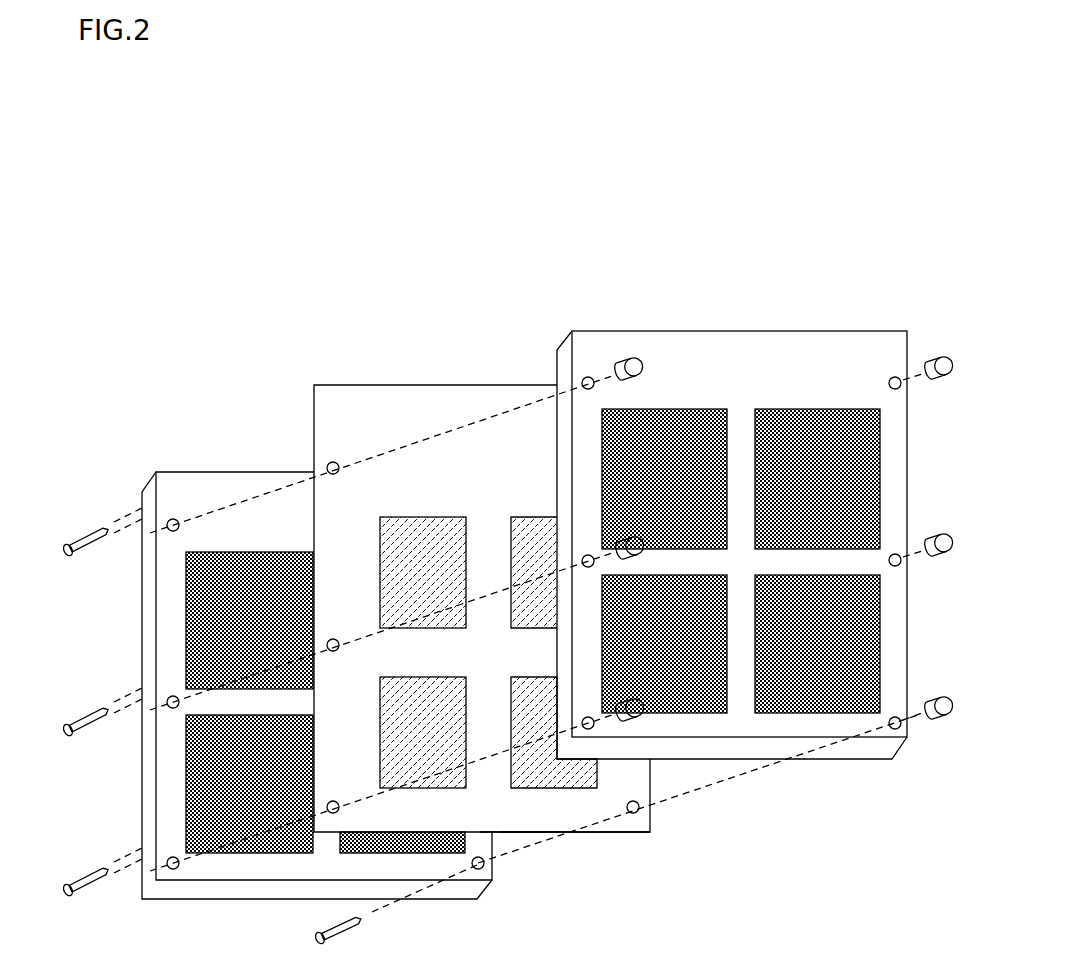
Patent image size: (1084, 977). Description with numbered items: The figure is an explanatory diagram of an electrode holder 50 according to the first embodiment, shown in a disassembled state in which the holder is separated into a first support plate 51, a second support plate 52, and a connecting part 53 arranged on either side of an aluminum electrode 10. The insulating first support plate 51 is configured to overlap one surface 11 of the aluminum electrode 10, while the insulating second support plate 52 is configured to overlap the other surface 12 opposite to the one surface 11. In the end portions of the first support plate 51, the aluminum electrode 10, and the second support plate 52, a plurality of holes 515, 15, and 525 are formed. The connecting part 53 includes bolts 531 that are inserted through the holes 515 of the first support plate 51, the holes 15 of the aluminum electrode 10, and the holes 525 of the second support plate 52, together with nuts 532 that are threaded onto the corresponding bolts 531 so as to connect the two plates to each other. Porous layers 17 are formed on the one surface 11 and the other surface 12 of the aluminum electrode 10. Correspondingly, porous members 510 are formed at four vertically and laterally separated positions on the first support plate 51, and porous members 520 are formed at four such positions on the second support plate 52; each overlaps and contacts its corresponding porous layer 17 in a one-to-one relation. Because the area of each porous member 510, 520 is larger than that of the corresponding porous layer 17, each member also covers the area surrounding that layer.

The aluminum electrode 10 is at (423, 400).
The one surface 11 is at (562, 817).
The other surface 12 is at (520, 818).
The holes 15 is at (334, 462).
The porous layers 17 is at (436, 525).
The electrode holder 50 is at (472, 212).
The first support plate 51 is at (563, 341).
The second support plate 52 is at (254, 471).
The connecting part 53 is at (493, 601).
The porous members 510 is at (822, 415).
The holes 515 is at (588, 377).
The porous members 520 is at (193, 622).
The holes 525 is at (173, 519).
The bolts 531 is at (66, 544).
The nuts 532 is at (633, 360).